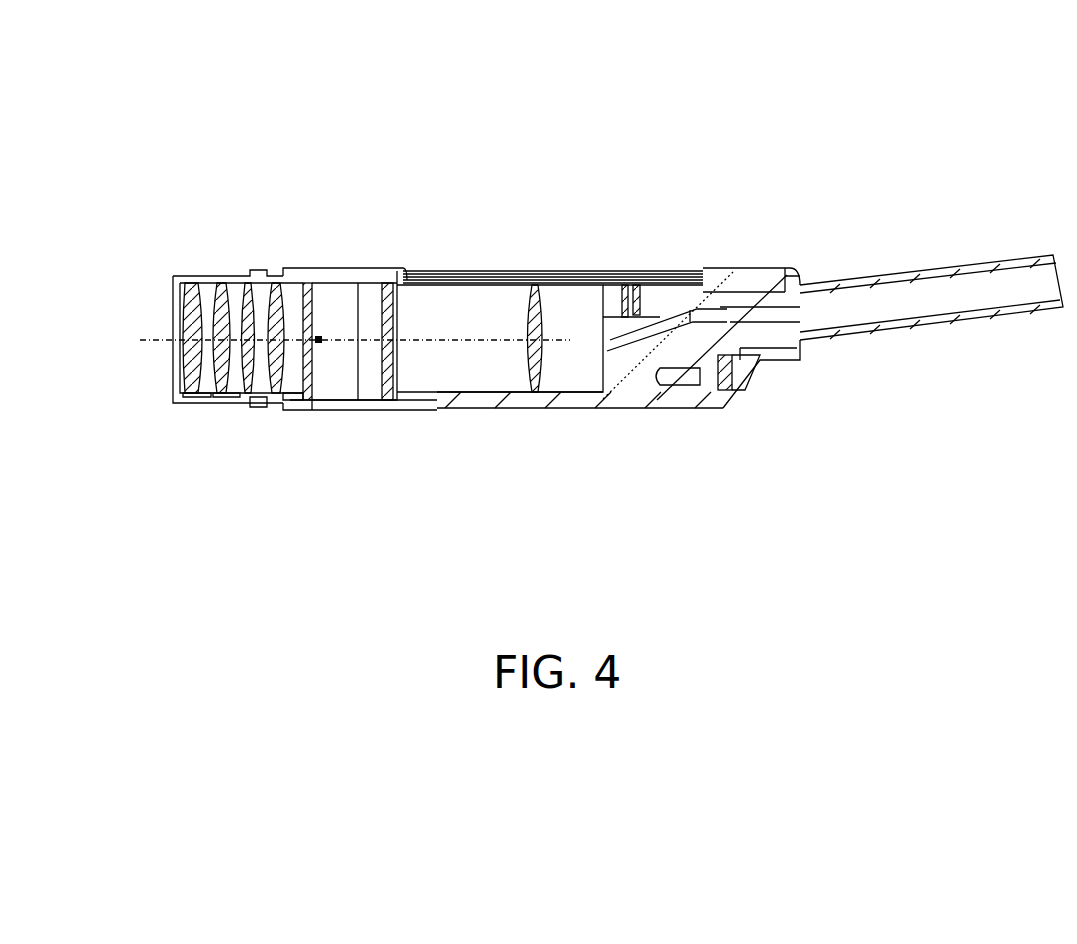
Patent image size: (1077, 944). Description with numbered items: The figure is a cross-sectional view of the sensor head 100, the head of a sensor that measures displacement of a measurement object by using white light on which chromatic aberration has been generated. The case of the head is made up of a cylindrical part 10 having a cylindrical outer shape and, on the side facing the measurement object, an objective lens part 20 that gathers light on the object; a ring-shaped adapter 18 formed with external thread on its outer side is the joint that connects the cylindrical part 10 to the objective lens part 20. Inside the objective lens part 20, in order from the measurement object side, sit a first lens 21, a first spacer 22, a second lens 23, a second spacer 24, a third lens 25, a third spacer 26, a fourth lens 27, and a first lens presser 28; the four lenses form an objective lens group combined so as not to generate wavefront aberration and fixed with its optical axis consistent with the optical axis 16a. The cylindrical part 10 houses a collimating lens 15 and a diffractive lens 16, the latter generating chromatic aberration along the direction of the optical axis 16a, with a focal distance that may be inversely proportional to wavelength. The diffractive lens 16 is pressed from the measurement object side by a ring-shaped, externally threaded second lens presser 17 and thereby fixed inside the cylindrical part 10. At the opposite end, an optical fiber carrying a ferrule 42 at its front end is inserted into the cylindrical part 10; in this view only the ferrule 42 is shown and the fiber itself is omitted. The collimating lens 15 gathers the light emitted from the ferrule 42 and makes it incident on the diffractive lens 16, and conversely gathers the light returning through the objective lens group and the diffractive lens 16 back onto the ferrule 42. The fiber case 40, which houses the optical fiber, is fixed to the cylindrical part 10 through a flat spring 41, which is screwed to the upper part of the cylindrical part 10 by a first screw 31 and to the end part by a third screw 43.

The sensor head 100 is at (596, 127).
The cylindrical part 10 is at (397, 270).
The collimating lens 15 is at (527, 290).
The diffractive lens 16 is at (395, 410).
The optical axis 16a is at (152, 342).
The second lens presser 17 is at (368, 412).
The adapter 18 is at (330, 410).
The objective lens part 20 is at (297, 270).
The first lens 21 is at (183, 273).
The first spacer 22 is at (203, 397).
The second lens 23 is at (227, 273).
The second spacer 24 is at (230, 397).
The third lens 25 is at (240, 275).
The third spacer 26 is at (262, 408).
The fourth lens 27 is at (275, 273).
The first lens presser 28 is at (298, 410).
The first screw 31 is at (627, 284).
The fiber case 40 is at (923, 268).
The flat spring 41 is at (690, 275).
The ferrule 42 is at (650, 305).
The third screw 43 is at (748, 392).